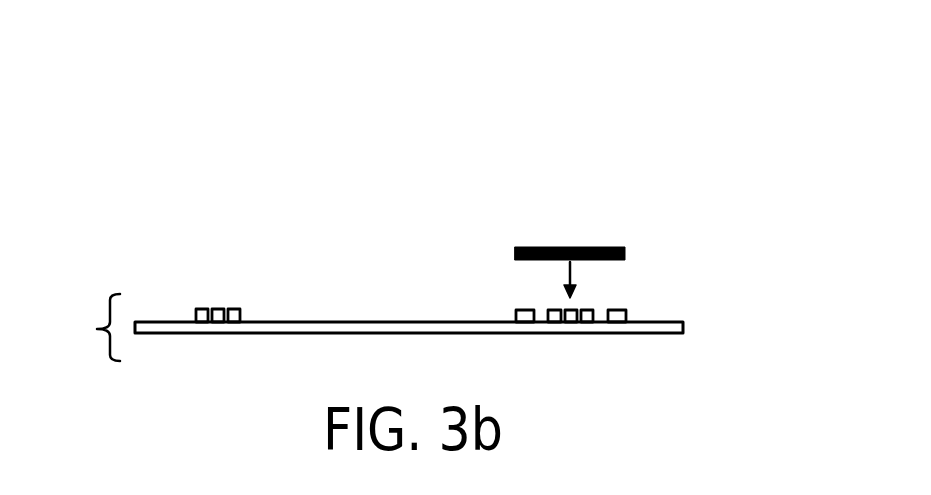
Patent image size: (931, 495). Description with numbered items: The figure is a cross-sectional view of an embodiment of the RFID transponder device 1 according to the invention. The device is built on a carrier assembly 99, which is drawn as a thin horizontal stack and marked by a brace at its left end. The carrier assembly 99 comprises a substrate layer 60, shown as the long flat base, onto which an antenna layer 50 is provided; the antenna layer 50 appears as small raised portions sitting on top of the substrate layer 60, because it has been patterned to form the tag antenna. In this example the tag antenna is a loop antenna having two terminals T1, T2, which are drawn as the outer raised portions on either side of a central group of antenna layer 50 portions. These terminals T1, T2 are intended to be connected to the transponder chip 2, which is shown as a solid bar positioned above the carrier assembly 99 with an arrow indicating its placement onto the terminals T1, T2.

The RFID transponder device 1 is at (700, 223).
The transponder chip 2 is at (573, 247).
The antenna layer 50 is at (203, 290).
The substrate layer 60 is at (683, 326).
The carrier assembly 99 is at (93, 327).
The first terminal T1 is at (515, 316).
The second terminal T2 is at (625, 312).